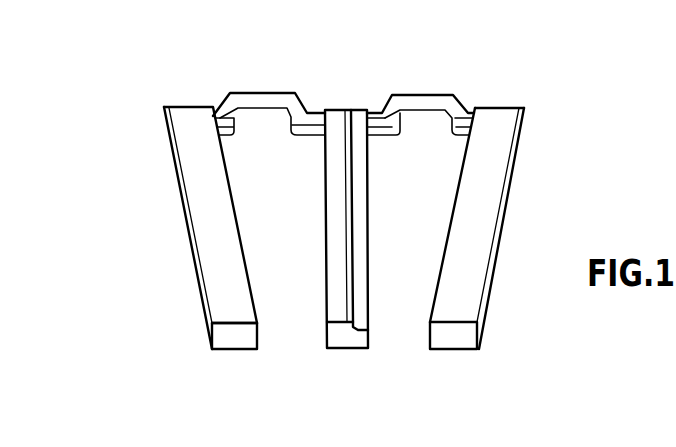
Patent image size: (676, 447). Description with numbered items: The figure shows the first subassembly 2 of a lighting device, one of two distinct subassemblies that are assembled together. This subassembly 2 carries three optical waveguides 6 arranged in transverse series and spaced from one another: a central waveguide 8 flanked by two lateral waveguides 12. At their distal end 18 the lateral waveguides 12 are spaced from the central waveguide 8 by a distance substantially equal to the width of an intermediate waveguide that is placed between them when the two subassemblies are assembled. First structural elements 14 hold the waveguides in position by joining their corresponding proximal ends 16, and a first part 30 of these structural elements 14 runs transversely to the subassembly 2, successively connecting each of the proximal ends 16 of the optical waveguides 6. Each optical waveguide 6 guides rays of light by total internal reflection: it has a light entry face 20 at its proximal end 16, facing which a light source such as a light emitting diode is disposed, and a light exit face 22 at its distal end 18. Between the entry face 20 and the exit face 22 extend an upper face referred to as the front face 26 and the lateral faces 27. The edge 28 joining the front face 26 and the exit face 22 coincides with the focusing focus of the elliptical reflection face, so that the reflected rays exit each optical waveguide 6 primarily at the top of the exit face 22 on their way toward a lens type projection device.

The first subassembly 2 is at (521, 231).
The optical waveguide 6 is at (313, 267).
The central waveguide 8 is at (335, 128).
The lateral waveguide 12 is at (480, 192).
The first structural elements 14 is at (470, 94).
The proximal end 16 is at (526, 112).
The distal end 18 is at (491, 332).
The light entry face 20 is at (185, 104).
The light exit face 22 is at (232, 330).
The front face 26 is at (210, 239).
The lateral face 27 is at (191, 278).
The edge 28 is at (232, 322).
The first part of the first structural elements 30 is at (414, 89).